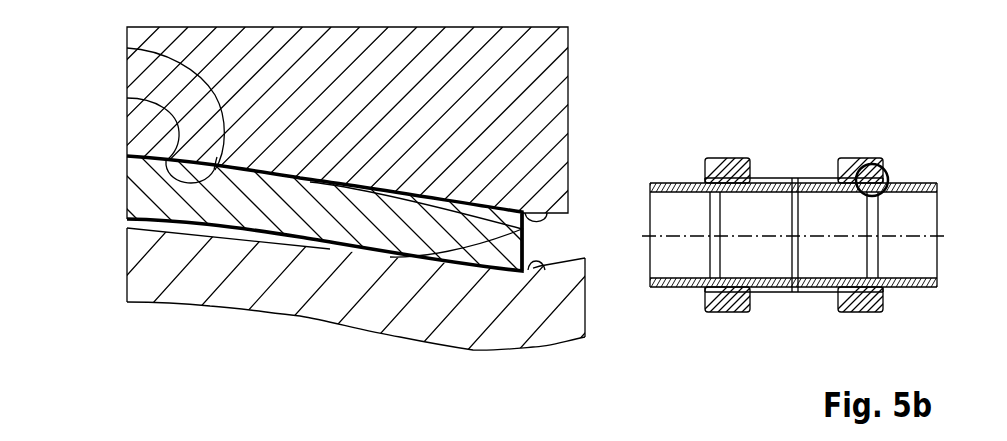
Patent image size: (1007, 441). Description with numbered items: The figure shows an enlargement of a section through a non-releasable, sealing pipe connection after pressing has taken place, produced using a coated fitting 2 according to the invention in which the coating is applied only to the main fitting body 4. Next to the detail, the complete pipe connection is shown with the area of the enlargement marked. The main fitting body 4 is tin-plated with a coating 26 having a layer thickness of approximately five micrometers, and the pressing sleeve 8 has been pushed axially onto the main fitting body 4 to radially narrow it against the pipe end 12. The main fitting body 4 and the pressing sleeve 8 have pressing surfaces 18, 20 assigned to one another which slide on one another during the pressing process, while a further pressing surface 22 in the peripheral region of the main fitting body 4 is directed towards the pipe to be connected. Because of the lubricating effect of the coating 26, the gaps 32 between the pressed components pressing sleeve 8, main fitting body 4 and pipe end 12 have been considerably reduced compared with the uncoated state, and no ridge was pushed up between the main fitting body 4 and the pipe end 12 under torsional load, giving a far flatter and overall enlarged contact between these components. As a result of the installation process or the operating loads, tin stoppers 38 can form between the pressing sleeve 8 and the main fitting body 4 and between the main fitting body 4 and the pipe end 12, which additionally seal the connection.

The fitting 2 is at (793, 157).
The main fitting body 4 is at (160, 247).
The pressing sleeve 8 is at (543, 140).
The pipe end 12 is at (160, 283).
The pressing surface 18 is at (127, 98).
The pressing surface 20 is at (127, 48).
The pressing surface 22 is at (210, 240).
The coating 26 is at (522, 229).
The gaps 32 is at (127, 218).
The tin stoppers 38 is at (565, 214).